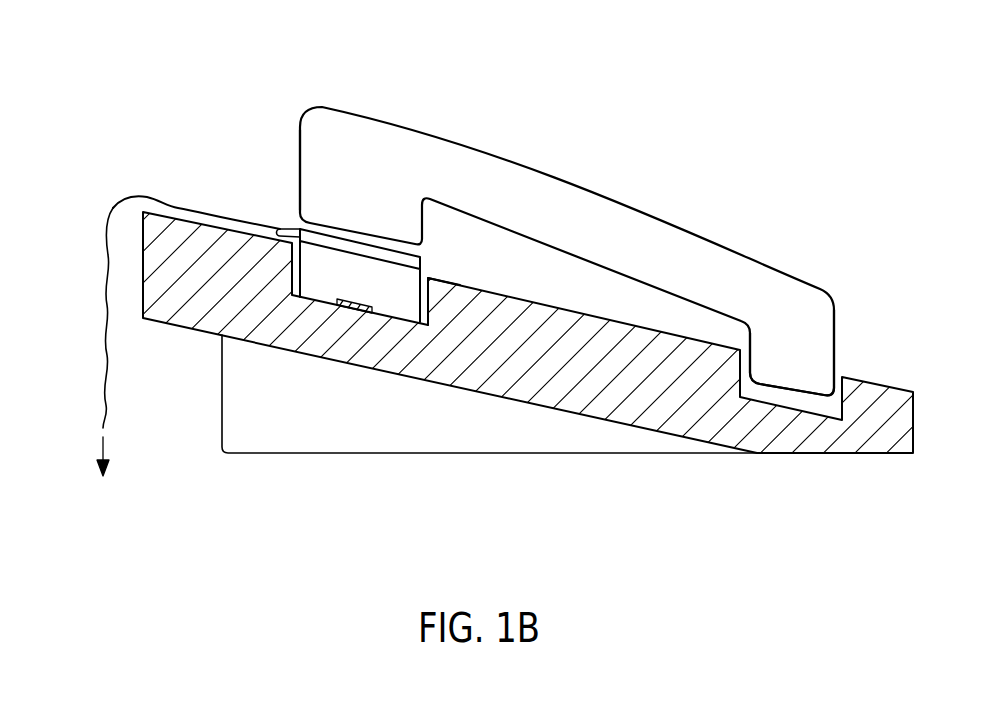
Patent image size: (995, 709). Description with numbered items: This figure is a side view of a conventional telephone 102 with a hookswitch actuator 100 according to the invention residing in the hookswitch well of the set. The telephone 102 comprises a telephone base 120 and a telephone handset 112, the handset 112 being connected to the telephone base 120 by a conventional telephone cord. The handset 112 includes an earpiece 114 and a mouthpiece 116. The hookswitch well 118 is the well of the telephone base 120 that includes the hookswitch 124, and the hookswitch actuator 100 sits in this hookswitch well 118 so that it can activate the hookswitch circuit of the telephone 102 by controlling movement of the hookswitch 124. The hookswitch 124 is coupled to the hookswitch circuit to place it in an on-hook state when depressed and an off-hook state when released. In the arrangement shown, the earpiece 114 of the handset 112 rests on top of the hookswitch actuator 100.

The telephone 102 is at (662, 51).
The hookswitch actuator 100 is at (405, 288).
The telephone handset 112 is at (587, 193).
The earpiece 114 is at (322, 176).
The mouthpiece 116 is at (823, 340).
The hookswitch well 118 is at (426, 290).
The telephone base 120 is at (803, 455).
The hookswitch 124 is at (367, 303).